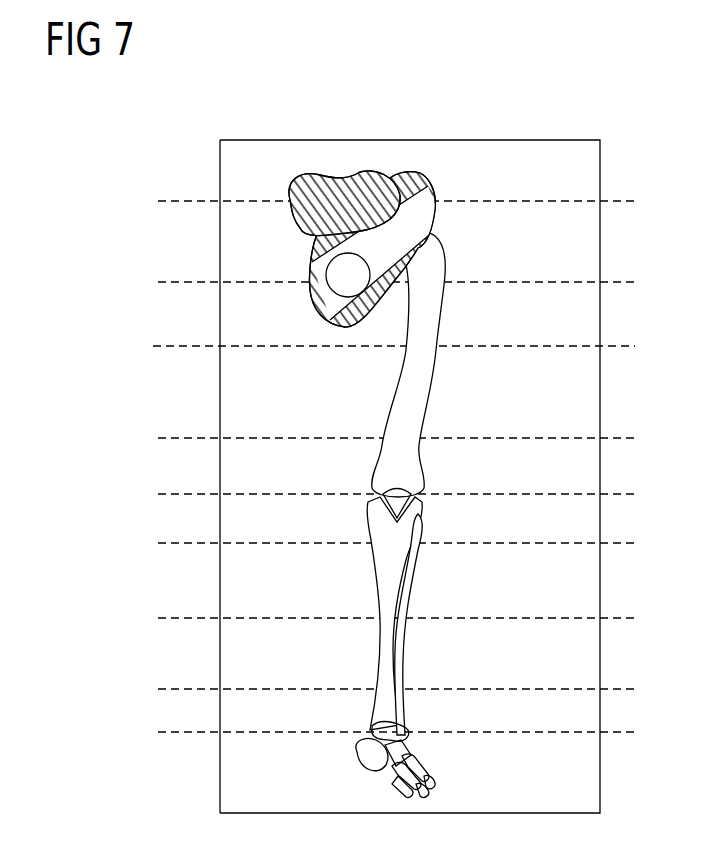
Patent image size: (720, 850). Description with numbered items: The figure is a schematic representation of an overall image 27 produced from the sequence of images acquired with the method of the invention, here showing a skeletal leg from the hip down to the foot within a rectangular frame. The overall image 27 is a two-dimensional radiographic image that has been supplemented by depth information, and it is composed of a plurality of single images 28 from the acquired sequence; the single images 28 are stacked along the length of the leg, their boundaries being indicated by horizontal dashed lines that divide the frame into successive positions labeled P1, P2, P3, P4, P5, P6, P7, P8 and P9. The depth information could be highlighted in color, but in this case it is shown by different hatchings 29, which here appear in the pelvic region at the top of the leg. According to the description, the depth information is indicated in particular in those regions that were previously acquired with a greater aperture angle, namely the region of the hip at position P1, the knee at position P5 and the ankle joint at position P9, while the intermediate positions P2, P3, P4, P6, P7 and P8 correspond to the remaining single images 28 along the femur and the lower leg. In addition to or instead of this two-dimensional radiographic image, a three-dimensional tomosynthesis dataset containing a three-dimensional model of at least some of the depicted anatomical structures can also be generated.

The overall image 27 is at (270, 140).
The single image 28 is at (233, 246).
The hatching 29 is at (360, 177).
The hip region P1 is at (616, 201).
The acquisition position P2 is at (616, 282).
The acquisition position P3 is at (616, 346).
The acquisition position P4 is at (616, 438).
The knee region P5 is at (616, 494).
The acquisition position P6 is at (616, 543).
The acquisition position P7 is at (616, 618).
The acquisition position P8 is at (616, 689).
The ankle joint region P9 is at (616, 732).